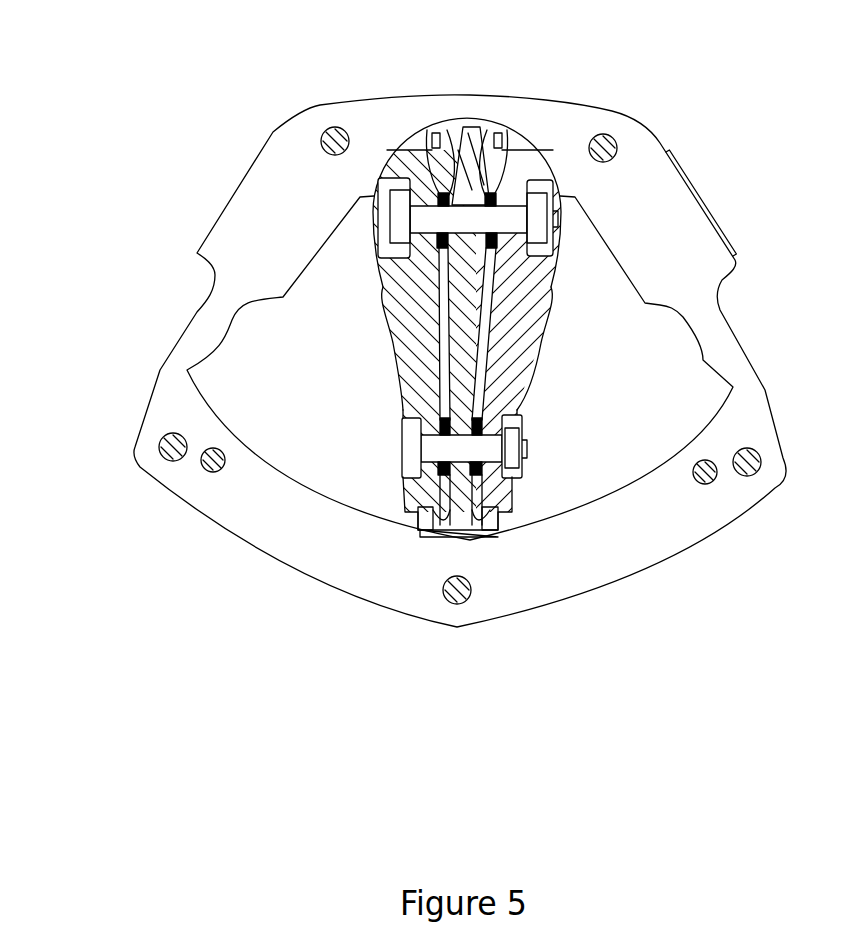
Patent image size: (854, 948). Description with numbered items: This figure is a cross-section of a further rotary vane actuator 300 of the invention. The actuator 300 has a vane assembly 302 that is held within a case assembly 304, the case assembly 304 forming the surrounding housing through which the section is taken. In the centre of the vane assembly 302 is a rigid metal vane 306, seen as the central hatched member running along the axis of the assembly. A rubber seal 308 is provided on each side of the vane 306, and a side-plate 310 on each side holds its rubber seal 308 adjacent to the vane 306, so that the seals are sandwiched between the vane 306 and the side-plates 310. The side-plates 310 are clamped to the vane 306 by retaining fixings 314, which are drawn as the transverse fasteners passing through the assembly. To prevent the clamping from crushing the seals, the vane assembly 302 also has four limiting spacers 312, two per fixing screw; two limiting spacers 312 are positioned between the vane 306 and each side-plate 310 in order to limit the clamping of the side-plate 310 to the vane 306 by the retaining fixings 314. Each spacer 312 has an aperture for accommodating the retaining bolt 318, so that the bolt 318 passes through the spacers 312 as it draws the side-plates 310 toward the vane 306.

The actuator 300 is at (212, 686).
The vane assembly 302 is at (413, 507).
The case assembly 304 is at (583, 560).
The rigid metal vane 306 is at (470, 287).
The rubber seal 308 is at (440, 332).
The side-plate 310 is at (400, 345).
The limiting spacer 312 is at (441, 194).
The retaining fixing 314 is at (510, 222).
The retaining bolt 318 is at (418, 227).